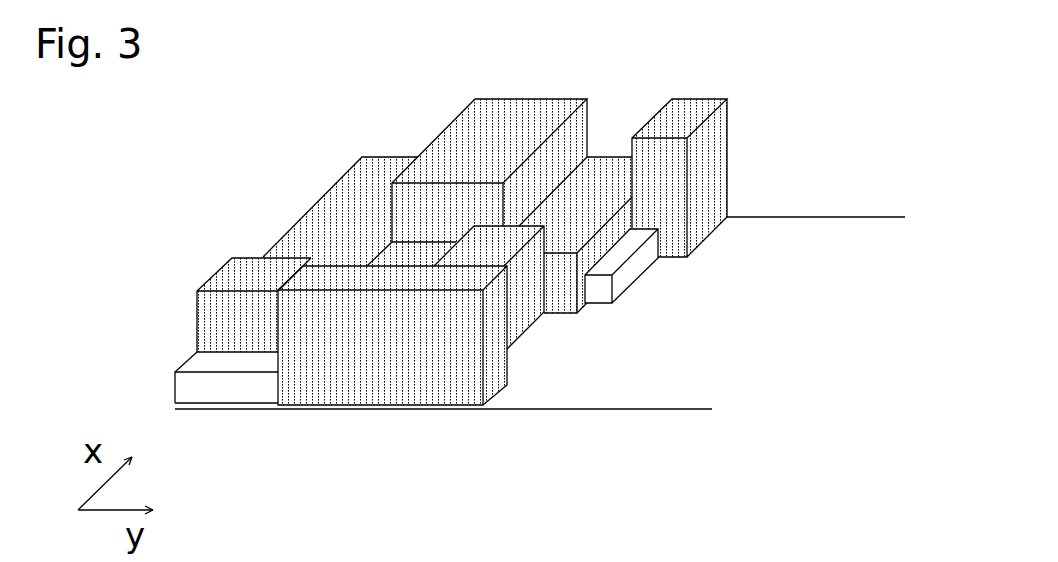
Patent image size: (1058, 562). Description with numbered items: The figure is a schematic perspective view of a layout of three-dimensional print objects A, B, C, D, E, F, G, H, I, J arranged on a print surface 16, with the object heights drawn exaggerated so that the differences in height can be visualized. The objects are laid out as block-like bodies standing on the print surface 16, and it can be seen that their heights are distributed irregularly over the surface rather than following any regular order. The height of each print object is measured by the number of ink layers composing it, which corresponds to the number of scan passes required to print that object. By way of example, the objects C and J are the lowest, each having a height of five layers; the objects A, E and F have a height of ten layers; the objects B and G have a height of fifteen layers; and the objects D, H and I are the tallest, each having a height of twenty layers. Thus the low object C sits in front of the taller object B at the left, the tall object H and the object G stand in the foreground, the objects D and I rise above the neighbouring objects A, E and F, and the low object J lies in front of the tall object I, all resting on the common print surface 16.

The print surface 16 is at (778, 248).
The print object A is at (333, 207).
The print object B is at (217, 317).
The print object C is at (185, 387).
The print object D is at (518, 123).
The print object E is at (415, 253).
The print object F is at (610, 175).
The print object G is at (520, 313).
The print object H is at (410, 383).
The print object I is at (682, 122).
The print object J is at (632, 267).